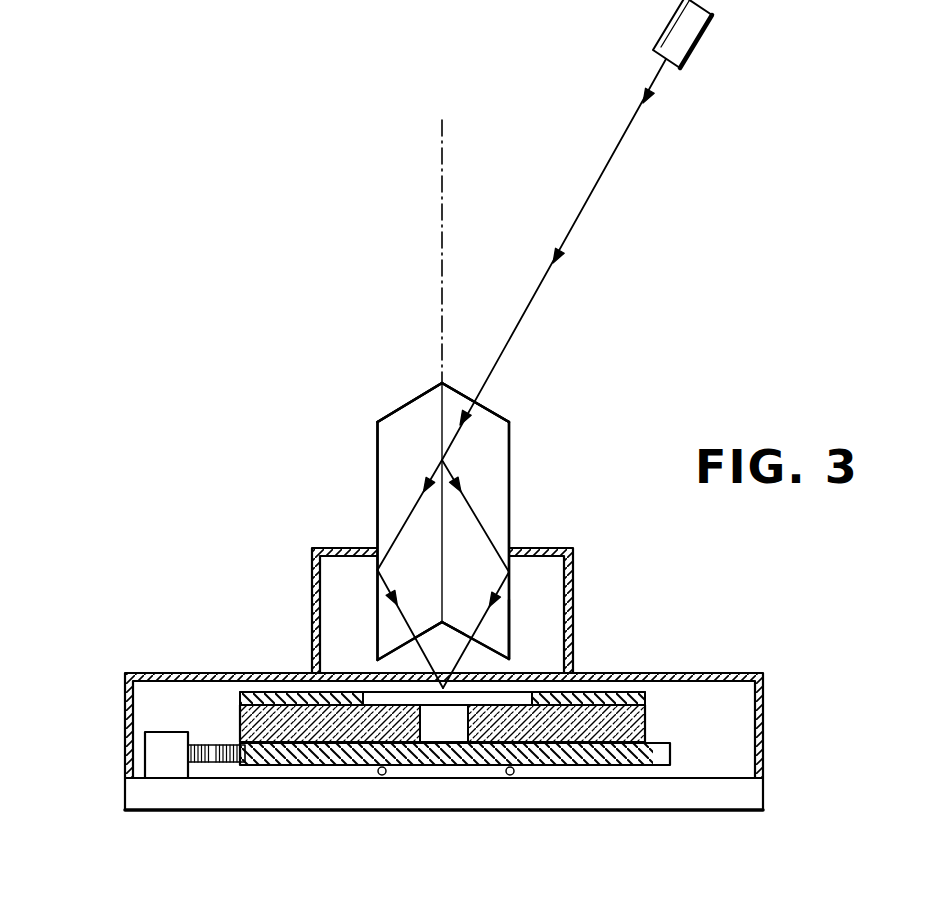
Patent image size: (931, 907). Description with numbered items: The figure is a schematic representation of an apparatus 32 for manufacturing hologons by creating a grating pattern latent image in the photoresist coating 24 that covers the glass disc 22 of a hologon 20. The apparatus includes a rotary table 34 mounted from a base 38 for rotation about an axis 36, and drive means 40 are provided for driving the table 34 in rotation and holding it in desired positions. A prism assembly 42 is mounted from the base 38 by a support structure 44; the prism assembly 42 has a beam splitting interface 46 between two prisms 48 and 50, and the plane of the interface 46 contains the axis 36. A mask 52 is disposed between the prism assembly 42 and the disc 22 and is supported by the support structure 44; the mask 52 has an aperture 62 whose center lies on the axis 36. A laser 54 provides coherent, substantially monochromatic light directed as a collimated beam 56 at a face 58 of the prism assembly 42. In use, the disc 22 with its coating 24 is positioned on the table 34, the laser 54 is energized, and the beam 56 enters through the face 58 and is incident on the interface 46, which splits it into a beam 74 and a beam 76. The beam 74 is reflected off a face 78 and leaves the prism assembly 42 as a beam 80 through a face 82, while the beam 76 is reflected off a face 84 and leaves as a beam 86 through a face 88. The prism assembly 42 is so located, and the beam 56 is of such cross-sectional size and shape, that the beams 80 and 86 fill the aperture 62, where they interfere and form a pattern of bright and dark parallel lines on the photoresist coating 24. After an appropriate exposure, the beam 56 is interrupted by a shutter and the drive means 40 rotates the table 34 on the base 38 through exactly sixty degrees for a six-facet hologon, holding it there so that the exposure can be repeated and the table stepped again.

The hologon 20 is at (192, 698).
The glass disc 22 is at (645, 727).
The coating of photoresist 24 is at (268, 692).
The apparatus 32 is at (236, 414).
The rotary table 34 is at (292, 767).
The axis 36 is at (442, 142).
The base 38 is at (610, 792).
The drive means 40 is at (108, 741).
The prism assembly 42 is at (546, 471).
The support structure 44 is at (573, 622).
The beam splitting interface 46 is at (441, 396).
The prism 48 is at (379, 422).
The prism 50 is at (497, 460).
The mask 52 is at (548, 655).
The laser 54 is at (713, 20).
The collimated beam 56 is at (602, 174).
The face 58 is at (497, 406).
The aperture 62 is at (447, 675).
The beam 74 is at (410, 498).
The beam 76 is at (474, 497).
The face 78 is at (377, 455).
The beam 80 is at (420, 655).
The face 82 is at (418, 640).
The face 84 is at (512, 512).
The beam 86 is at (465, 655).
The face 88 is at (463, 637).